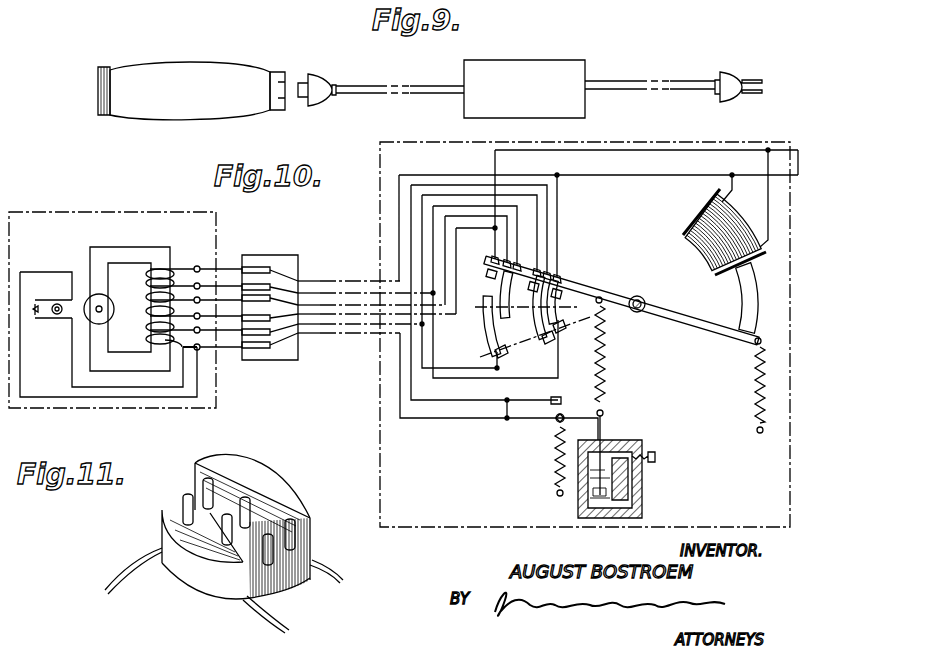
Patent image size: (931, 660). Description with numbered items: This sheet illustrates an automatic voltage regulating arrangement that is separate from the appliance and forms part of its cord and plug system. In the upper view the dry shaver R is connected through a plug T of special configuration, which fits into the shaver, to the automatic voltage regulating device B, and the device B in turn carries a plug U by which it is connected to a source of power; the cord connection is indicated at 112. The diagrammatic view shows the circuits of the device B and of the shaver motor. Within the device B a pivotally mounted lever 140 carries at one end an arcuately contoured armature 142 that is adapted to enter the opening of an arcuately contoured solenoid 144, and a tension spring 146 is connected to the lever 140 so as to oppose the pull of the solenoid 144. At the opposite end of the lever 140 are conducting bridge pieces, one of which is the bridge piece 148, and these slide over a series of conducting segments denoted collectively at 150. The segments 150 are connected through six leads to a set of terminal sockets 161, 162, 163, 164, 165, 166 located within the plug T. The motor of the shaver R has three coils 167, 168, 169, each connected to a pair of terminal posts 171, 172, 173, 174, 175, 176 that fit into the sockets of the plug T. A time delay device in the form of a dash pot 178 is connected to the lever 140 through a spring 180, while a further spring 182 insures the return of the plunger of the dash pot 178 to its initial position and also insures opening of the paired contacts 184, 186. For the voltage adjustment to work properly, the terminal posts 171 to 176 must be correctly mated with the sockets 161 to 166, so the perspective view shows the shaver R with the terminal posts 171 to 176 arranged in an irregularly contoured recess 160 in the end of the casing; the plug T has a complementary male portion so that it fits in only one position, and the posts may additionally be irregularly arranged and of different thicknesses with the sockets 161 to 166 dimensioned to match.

In FIG. 9, the cord/connection 112 is at (218, 0).
In FIG. 10, the dry shaver R is at (156, 418).
In FIG. 11, the dry shaver R is at (312, 598).
In FIG. 9, the plug T is at (324, 79).
In FIG. 10, the plug T is at (290, 252).
In FIG. 9, the automatic voltage regulating device B is at (524, 89).
In FIG. 10, the automatic voltage regulating device B is at (461, 488).
In FIG. 9, the plug U is at (729, 70).
In FIG. 10, the lever 140 is at (670, 308).
In FIG. 10, the armature 142 is at (742, 284).
In FIG. 10, the solenoid 144 is at (690, 234).
In FIG. 10, the tension spring 146 is at (528, 266).
In FIG. 10, the conducting bridge piece 148 is at (560, 285).
In FIG. 10, the conducting segments 150 is at (536, 346).
In FIG. 11, the plug body 160 is at (236, 527).
In FIG. 10, the terminal socket 161 is at (270, 273).
In FIG. 11, the terminal socket 161 is at (183, 503).
In FIG. 10, the terminal socket 162 is at (270, 288).
In FIG. 11, the terminal socket 162 is at (213, 485).
In FIG. 10, the terminal socket 163 is at (270, 298).
In FIG. 11, the terminal socket 163 is at (228, 525).
In FIG. 10, the terminal socket 164 is at (270, 318).
In FIG. 11, the terminal socket 164 is at (250, 503).
In FIG. 10, the terminal socket 165 is at (270, 332).
In FIG. 10, the terminal socket 166 is at (270, 345).
In FIG. 11, the terminal socket 166 is at (296, 528).
In FIG. 10, the coil 167 is at (150, 272).
In FIG. 10, the coil 168 is at (165, 300).
In FIG. 10, the coil 169 is at (156, 339).
In FIG. 10, the terminal post 171 is at (224, 270).
In FIG. 10, the terminal post 172 is at (240, 287).
In FIG. 10, the terminal post 173 is at (230, 298).
In FIG. 10, the terminal post 174 is at (230, 318).
In FIG. 10, the terminal post 175 is at (224, 332).
In FIG. 10, the terminal post 176 is at (220, 347).
In FIG. 10, the dash pot 178 is at (645, 500).
In FIG. 10, the spring 180 is at (606, 342).
In FIG. 10, the spring 182 is at (556, 467).
In FIG. 10, the contact 184 is at (568, 386).
In FIG. 10, the contact 186 is at (555, 421).